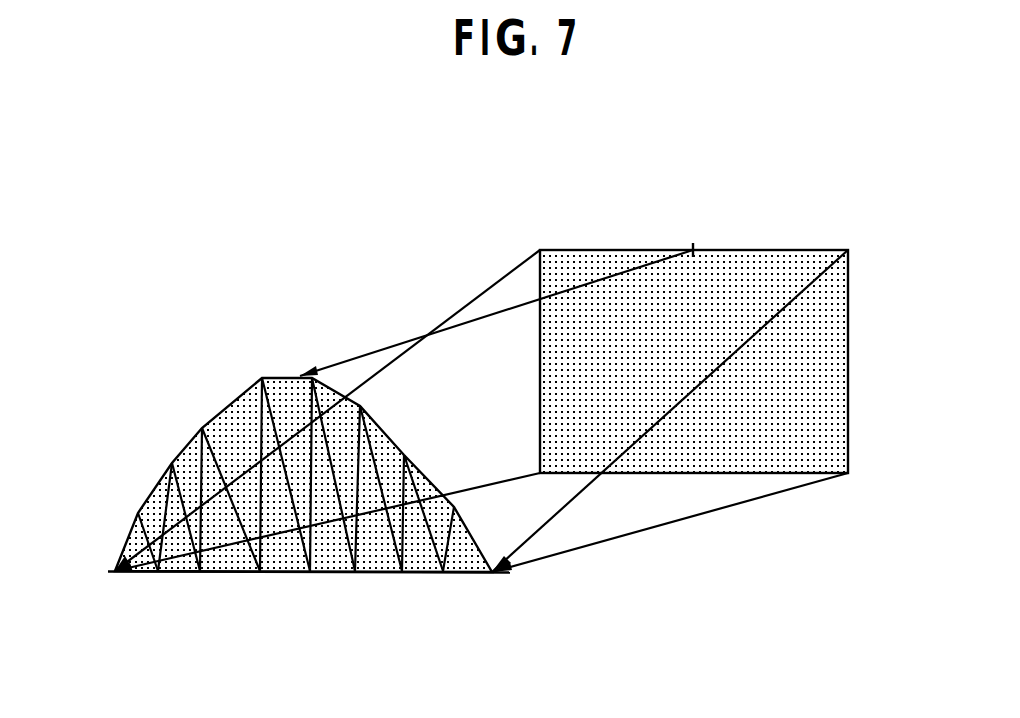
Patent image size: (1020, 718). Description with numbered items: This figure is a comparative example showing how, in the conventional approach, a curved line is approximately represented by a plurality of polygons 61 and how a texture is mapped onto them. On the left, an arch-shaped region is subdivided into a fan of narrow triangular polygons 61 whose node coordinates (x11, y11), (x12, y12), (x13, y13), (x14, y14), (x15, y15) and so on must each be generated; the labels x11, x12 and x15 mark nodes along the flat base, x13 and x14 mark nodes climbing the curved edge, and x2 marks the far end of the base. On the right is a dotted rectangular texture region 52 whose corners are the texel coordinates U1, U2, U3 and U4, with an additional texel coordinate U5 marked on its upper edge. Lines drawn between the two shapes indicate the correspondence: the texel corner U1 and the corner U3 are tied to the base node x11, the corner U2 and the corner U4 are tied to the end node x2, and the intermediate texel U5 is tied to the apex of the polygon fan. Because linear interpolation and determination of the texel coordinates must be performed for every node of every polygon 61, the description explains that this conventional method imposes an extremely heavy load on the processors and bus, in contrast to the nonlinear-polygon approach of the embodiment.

The projection image (texture) region 52 is at (773, 249).
The polygon 61 is at (217, 418).
The texture coordinate (U1, V1) U1 is at (358, 392).
The texture coordinate (U2, V2) U2 is at (701, 392).
The texture coordinate (U3, V3) U3 is at (537, 472).
The texture coordinate (U4, V4) U4 is at (699, 522).
The texture coordinate (U5, V5) U5 is at (527, 294).
The vertex coordinate (x2, y2) x2 is at (506, 582).
The node coordinate (x11, y11) x11 is at (178, 485).
The node coordinate (x12, y12) x12 is at (158, 572).
The node coordinate (x13, y13) x13 is at (138, 513).
The node coordinate (x14, y14) x14 is at (172, 463).
The node coordinate (x15, y15) x15 is at (198, 572).